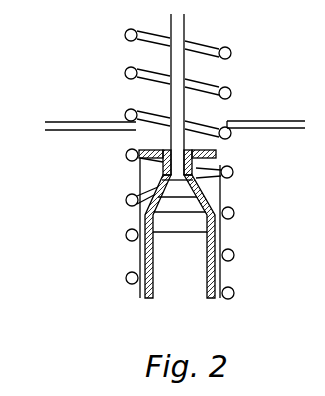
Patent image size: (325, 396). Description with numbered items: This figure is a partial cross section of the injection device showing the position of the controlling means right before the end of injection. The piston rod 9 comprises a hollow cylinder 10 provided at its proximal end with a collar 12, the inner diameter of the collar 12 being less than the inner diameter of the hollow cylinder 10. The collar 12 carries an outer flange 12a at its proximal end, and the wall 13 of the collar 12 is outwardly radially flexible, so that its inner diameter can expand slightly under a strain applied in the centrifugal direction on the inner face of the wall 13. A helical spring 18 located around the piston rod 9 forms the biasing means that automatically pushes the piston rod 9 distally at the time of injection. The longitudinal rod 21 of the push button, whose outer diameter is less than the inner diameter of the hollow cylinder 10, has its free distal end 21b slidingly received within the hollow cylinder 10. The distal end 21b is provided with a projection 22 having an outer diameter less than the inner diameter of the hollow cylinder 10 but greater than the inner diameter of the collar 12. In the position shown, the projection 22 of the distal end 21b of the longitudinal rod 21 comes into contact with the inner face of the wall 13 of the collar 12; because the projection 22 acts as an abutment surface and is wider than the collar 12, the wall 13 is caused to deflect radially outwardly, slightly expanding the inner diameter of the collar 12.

The piston rod 9 is at (232, 286).
The hollow cylinder 10 is at (222, 266).
The collar 12 is at (150, 180).
The outer flange 12a is at (217, 152).
The wall 13 is at (198, 121).
The helical spring 18 is at (124, 75).
The longitudinal rod 21 is at (170, 24).
The free distal end 21b is at (222, 235).
The projection 22 is at (160, 163).